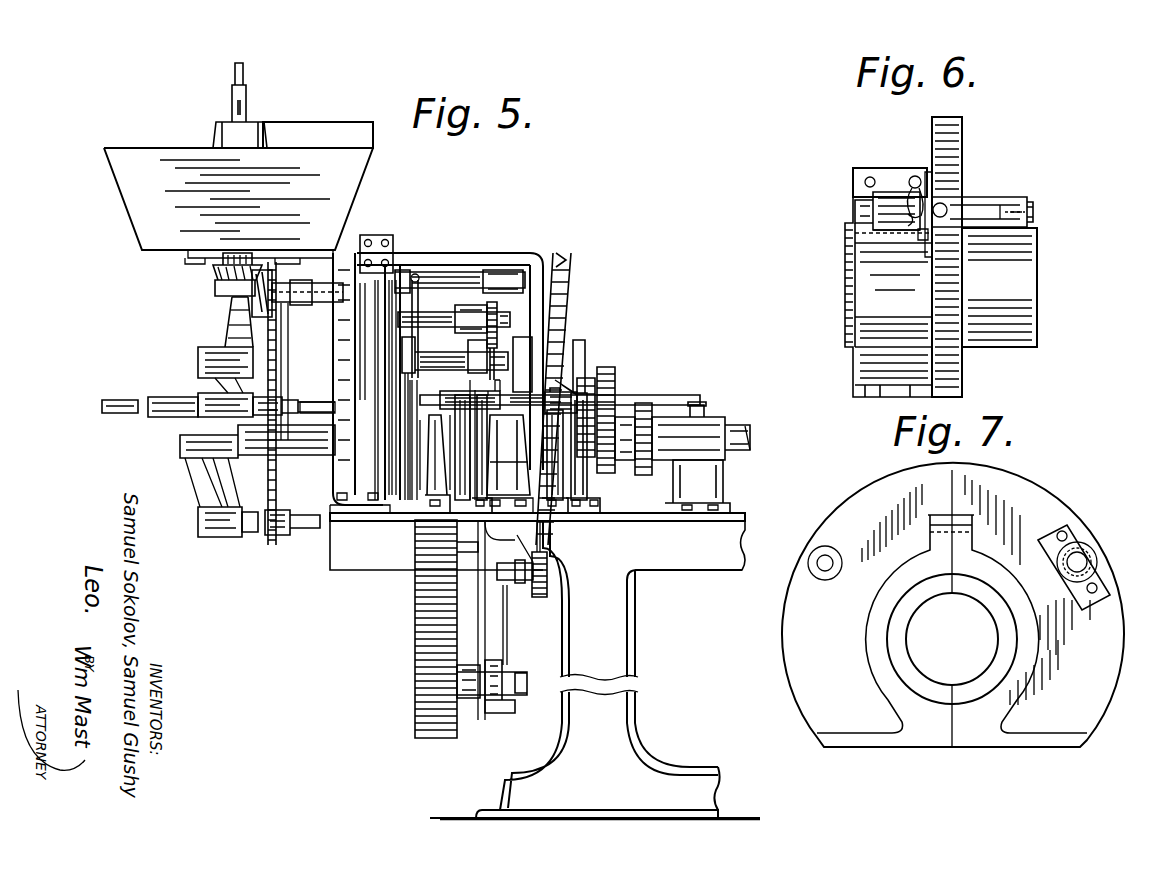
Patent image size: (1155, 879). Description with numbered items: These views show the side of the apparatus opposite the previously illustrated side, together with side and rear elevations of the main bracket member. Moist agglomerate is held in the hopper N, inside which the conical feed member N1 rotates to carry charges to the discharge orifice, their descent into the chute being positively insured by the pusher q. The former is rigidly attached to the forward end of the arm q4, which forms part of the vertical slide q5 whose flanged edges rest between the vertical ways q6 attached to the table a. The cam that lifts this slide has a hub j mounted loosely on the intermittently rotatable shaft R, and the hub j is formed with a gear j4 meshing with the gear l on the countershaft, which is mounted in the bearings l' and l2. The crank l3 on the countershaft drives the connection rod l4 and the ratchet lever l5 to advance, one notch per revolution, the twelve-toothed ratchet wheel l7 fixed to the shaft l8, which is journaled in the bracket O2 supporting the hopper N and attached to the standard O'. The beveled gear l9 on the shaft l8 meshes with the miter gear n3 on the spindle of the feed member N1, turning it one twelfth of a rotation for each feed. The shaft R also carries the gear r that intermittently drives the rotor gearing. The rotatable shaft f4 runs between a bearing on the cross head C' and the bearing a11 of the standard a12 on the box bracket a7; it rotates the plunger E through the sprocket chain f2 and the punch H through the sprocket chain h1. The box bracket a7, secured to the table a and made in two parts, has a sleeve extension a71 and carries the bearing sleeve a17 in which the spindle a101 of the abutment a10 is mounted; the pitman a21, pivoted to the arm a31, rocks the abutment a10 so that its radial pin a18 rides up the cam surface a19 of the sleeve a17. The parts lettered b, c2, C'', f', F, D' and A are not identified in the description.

In FIG. 5, the hopper N is at (238, 186).
In FIG. 5, the conical feed member N1 is at (270, 124).
In FIG. 5, the miter gear n3 is at (213, 272).
In FIG. 5, the rotatable shaft f4 is at (252, 283).
In FIG. 5, the bracket O2 is at (307, 284).
In FIG. 5, the bearing a11 is at (233, 300).
In FIG. 5, the ratchet shaft l8 is at (250, 308).
In FIG. 5, the beveled gear l9 is at (250, 322).
In FIG. 5, the standard a12 is at (250, 333).
In FIG. 5, the sprocket chain h1 is at (267, 480).
In FIG. 5, the rod b is at (298, 371).
In FIG. 5, the cross head C' is at (209, 450).
In FIG. 5, the crank shaft c2 is at (200, 413).
In FIG. 5, the crank bar C'' is at (257, 450).
In FIG. 5, the punch H is at (281, 510).
In FIG. 5, the standard O' is at (436, 383).
In FIG. 5, the pusher q is at (358, 262).
In FIG. 5, the arm q4 is at (400, 270).
In FIG. 5, the ratchet wheel l7 is at (416, 280).
In FIG. 5, the ratchet lever l5 is at (450, 278).
In FIG. 5, the connection rod l4 is at (430, 305).
In FIG. 5, the crank l3 is at (428, 362).
In FIG. 5, the bearing l2 is at (445, 380).
In FIG. 5, the pawl f' is at (490, 385).
In FIG. 5, the sprocket chain f2 is at (300, 400).
In FIG. 5, the plunger E is at (330, 403).
In FIG. 5, the pedestal F is at (506, 470).
In FIG. 5, the vertical slide q5 is at (592, 245).
In FIG. 5, the post D' is at (608, 417).
In FIG. 5, the vertical ways q6 is at (575, 345).
In FIG. 5, the bearing l' is at (595, 401).
In FIG. 5, the gear l is at (622, 415).
In FIG. 5, the gear r is at (652, 408).
In FIG. 5, the intermittently rotatable shaft R is at (752, 438).
In FIG. 5, the table a is at (746, 517).
In FIG. 5, the stand A is at (595, 670).
In FIG. 5, the cam hub j is at (605, 530).
In FIG. 5, the cam gear j4 is at (615, 520).
In FIG. 6, the sleeve extension a71 is at (984, 257).
In FIG. 7, the sleeve extension a71 is at (905, 652).
In FIG. 6, the box bracket a7 is at (862, 212).
In FIG. 7, the box bracket a7 is at (930, 556).
In FIG. 6, the radial pin a18 is at (950, 205).
In FIG. 6, the bearing sleeve a17 is at (873, 208).
In FIG. 6, the pitman a21 is at (913, 177).
In FIG. 6, the cam surface a19 is at (946, 206).
In FIG. 6, the abutment a10 is at (1028, 200).
In FIG. 6, the spindle a101 is at (885, 228).
In FIG. 6, the arm a31 is at (918, 236).